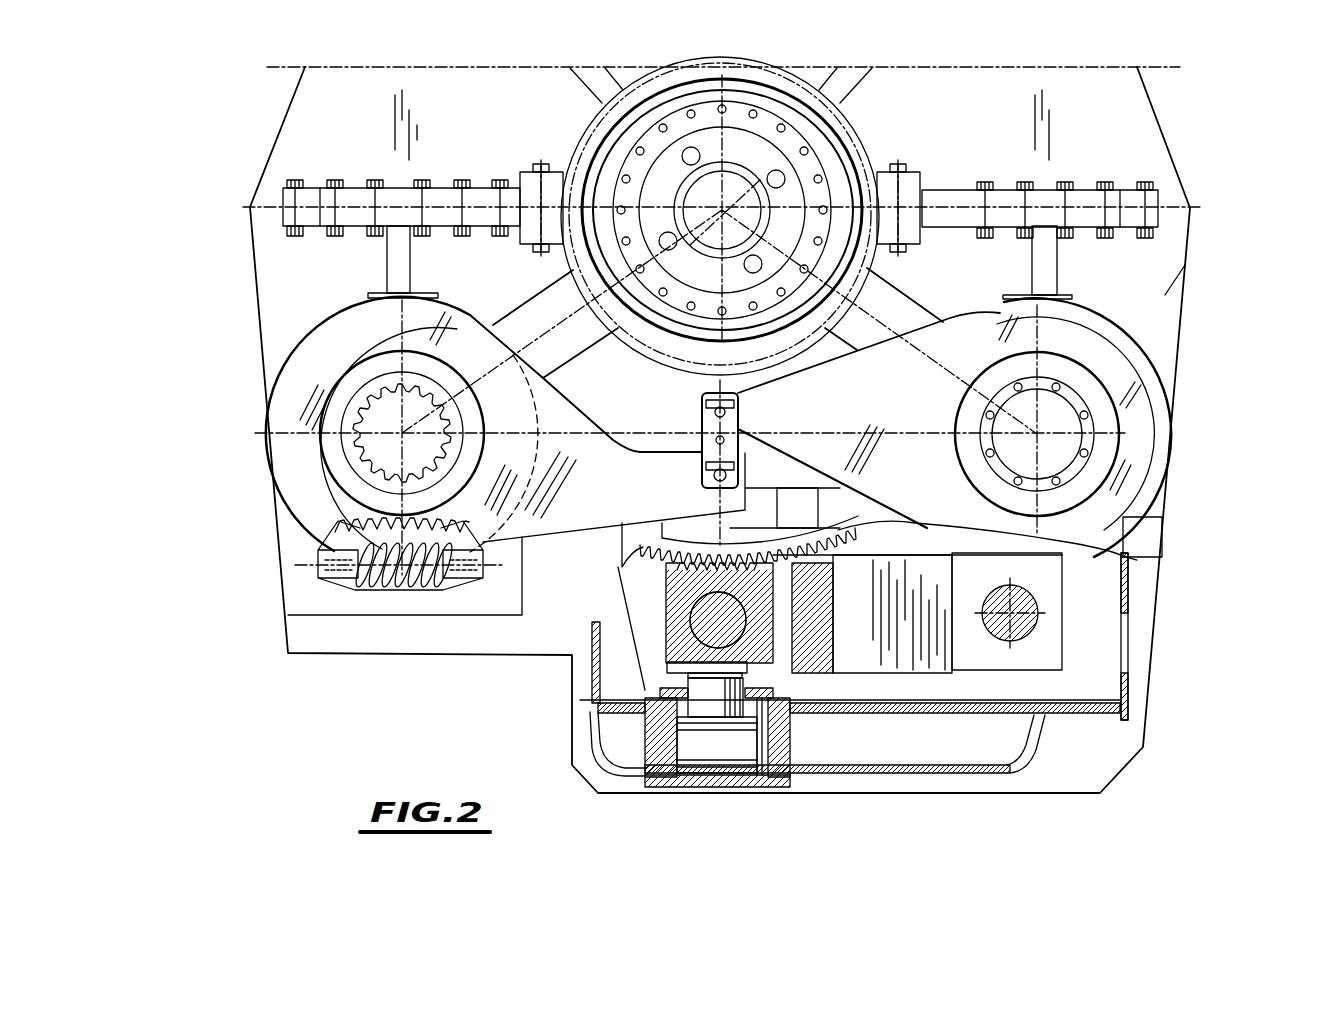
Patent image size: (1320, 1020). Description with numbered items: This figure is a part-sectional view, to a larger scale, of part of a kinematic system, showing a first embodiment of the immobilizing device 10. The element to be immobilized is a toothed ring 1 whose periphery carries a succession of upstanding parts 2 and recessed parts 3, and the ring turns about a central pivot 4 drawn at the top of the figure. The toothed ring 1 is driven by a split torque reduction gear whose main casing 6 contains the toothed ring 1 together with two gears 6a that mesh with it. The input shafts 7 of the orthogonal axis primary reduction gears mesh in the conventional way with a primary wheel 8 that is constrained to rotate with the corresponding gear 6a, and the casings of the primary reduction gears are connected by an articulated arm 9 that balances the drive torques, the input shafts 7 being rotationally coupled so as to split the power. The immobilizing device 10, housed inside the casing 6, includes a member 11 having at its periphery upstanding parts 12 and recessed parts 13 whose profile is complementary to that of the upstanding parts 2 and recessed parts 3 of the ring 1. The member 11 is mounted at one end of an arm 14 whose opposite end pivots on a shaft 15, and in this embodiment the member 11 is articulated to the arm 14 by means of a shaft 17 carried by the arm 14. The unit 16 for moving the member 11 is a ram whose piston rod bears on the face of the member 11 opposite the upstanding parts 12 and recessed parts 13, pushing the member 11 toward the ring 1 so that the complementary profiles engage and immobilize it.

The toothed ring 1 is at (763, 537).
The upstanding parts 2 is at (622, 567).
The recessed parts 3 is at (843, 547).
The pivot bearing 4 is at (730, 190).
The main casing 6 is at (1193, 272).
The gears 6a is at (360, 404).
The input shafts 7 is at (355, 585).
The primary wheel 8 is at (345, 528).
The articulated arm 9 is at (708, 423).
The immobilizing device 10 is at (926, 680).
The member 11 is at (680, 640).
The upstanding parts 12 is at (663, 570).
The recessed parts 13 is at (773, 585).
The arm 14 is at (873, 660).
The shaft 15 is at (1010, 627).
The unit for moving the member 16 is at (698, 740).
The shaft 17 is at (733, 632).